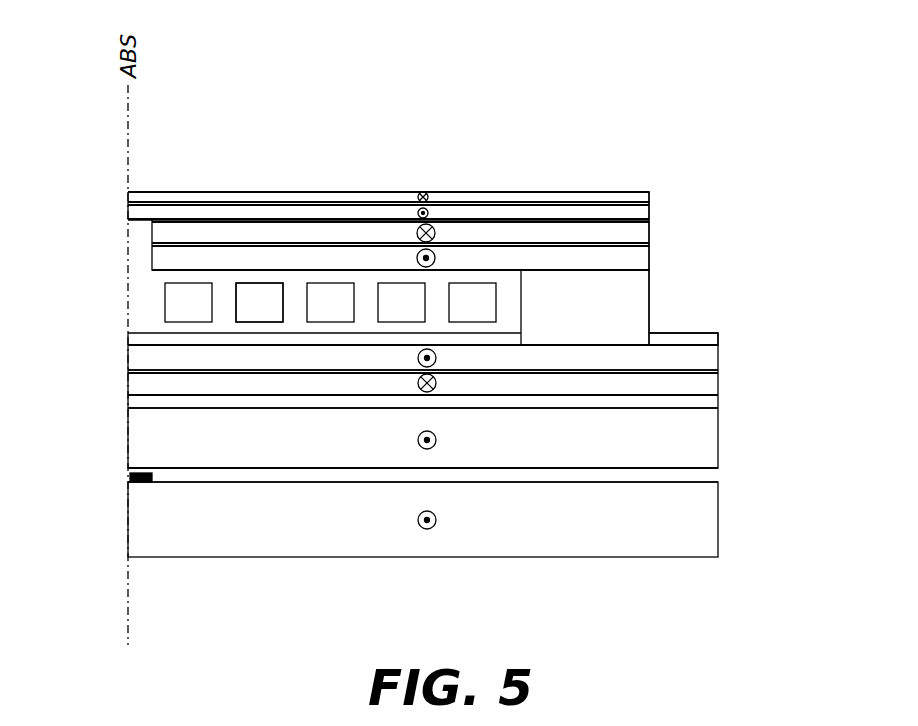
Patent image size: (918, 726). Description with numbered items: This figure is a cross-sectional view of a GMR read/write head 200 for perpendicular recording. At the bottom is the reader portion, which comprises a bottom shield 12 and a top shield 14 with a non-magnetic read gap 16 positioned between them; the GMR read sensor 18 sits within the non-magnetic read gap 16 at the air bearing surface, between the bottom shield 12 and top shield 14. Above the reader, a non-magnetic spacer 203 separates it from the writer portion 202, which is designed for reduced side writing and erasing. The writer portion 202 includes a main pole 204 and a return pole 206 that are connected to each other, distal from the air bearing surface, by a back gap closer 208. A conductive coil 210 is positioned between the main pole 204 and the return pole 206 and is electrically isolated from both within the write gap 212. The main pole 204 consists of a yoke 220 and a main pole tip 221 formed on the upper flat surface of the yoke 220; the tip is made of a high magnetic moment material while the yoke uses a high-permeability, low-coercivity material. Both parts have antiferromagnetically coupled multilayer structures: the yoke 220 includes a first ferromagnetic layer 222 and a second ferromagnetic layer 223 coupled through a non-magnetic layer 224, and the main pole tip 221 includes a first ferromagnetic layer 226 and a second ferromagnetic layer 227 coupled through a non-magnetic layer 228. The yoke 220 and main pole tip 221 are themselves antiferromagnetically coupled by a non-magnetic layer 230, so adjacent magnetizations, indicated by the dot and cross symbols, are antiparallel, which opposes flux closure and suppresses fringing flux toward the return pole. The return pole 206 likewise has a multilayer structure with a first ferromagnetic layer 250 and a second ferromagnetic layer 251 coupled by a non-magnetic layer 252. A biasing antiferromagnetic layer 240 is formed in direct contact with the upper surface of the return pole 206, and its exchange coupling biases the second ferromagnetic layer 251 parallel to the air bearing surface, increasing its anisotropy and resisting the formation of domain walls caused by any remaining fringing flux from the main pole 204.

The GMR read/write head 200 is at (702, 138).
The writer portion 202 is at (837, 195).
The main pole 204 is at (730, 193).
The return pole 206 is at (725, 345).
The back gap closer 208 is at (645, 308).
The conductive coil 210 is at (263, 282).
The write gap 212 is at (145, 300).
The yoke 220 is at (663, 220).
The main pole tip 221 is at (663, 193).
The first ferromagnetic layer 222 is at (172, 258).
The second ferromagnetic layer 223 is at (172, 233).
The non-magnetic layer 224 is at (197, 243).
The first ferromagnetic layer 226 is at (388, 210).
The second ferromagnetic layer 227 is at (558, 193).
The non-magnetic layer 228 is at (503, 205).
The non-magnetic layer 230 is at (330, 220).
The biasing antiferromagnetic layer 240 is at (680, 340).
The first ferromagnetic layer 250 is at (142, 385).
The second ferromagnetic layer 251 is at (148, 360).
The non-magnetic layer 252 is at (657, 375).
The non-magnetic spacer 203 is at (138, 402).
The top shield 14 is at (148, 440).
The non-magnetic read gap 16 is at (705, 474).
The GMR read sensor 18 is at (120, 475).
The bottom shield 12 is at (148, 522).